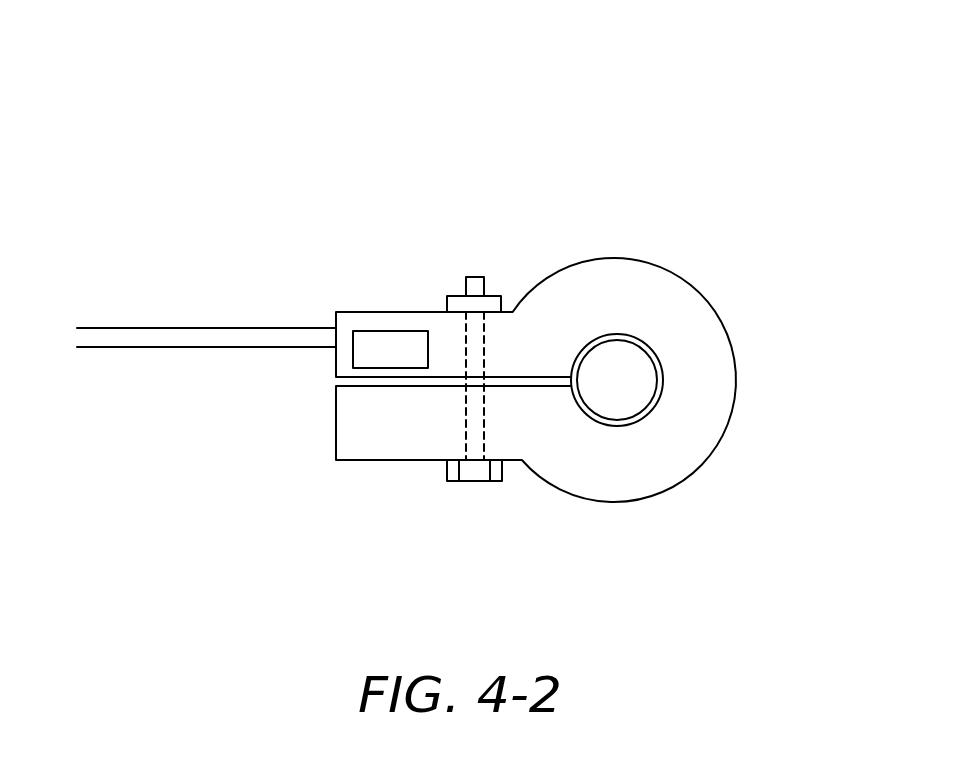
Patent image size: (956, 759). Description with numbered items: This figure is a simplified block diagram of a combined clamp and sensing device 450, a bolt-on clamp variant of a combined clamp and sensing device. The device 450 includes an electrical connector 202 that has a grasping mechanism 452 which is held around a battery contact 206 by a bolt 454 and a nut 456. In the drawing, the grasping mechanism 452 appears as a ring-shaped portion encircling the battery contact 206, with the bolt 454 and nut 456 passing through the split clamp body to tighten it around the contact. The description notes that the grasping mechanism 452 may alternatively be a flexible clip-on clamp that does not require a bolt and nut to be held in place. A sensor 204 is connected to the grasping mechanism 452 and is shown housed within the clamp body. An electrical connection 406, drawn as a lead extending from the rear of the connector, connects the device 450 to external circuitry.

The combined clamp and sensing device 450 is at (485, 108).
The electrical connector 202 is at (580, 500).
The electrical connection 406 is at (155, 347).
The sensor 204 is at (374, 338).
The nut 456 is at (460, 302).
The bolt 454 is at (473, 477).
The grasping mechanism 452 is at (630, 477).
The battery contact 206 is at (638, 363).